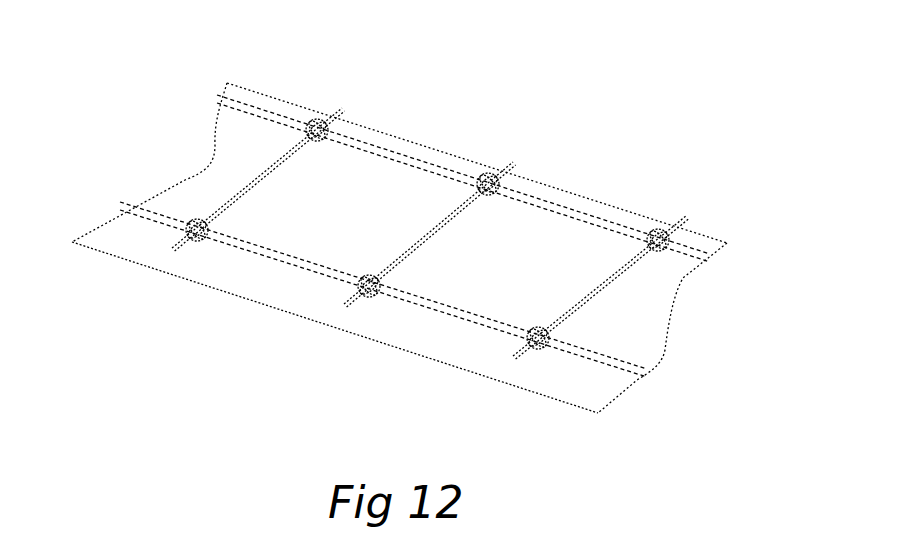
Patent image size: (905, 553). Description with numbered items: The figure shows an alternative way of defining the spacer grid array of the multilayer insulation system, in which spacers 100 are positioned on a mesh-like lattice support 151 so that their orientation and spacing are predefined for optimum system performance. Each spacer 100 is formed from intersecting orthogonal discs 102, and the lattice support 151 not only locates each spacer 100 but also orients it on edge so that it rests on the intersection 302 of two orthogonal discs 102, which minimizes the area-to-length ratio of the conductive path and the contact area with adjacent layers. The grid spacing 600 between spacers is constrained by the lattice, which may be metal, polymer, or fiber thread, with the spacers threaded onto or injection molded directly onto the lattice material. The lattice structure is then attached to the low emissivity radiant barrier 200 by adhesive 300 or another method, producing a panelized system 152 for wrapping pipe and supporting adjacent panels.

The spacer 100 is at (432, 248).
The orthogonal discs 102 is at (533, 333).
The lattice support 151 is at (425, 163).
The panelized system 152 is at (383, 113).
The radiant barrier 200 is at (233, 280).
The adhesive 300 is at (490, 200).
The intersection of two orthogonal discs 302 is at (660, 256).
The grid spacing 600 is at (338, 213).